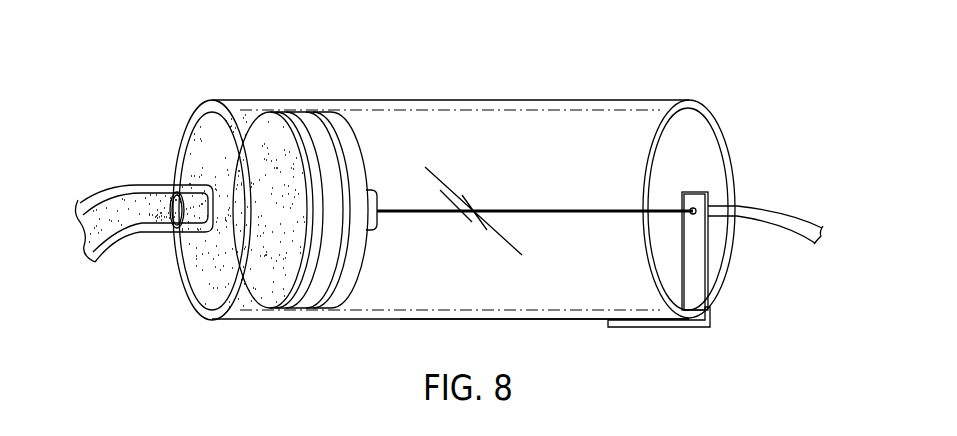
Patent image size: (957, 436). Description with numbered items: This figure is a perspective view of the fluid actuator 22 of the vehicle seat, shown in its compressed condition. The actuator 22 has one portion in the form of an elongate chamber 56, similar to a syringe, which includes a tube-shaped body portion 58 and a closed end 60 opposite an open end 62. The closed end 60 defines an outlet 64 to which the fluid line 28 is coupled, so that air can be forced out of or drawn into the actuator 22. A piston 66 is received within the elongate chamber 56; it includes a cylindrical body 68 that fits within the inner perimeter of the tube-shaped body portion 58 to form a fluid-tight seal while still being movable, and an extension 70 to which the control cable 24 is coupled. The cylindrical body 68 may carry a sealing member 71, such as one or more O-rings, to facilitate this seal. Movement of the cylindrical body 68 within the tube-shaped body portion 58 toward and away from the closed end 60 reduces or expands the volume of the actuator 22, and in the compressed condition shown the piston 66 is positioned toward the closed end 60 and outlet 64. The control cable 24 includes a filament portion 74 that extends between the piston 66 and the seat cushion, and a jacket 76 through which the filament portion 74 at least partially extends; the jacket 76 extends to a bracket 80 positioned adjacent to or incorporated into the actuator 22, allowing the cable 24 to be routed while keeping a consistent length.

The actuator 22 is at (523, 61).
The control cable 24 is at (748, 193).
The fluid line 28 is at (115, 188).
The elongate chamber 56 is at (223, 320).
The tube-shaped body portion 58 is at (563, 319).
The closed end 60 is at (193, 130).
The open end 62 is at (733, 161).
The outlet 64 is at (170, 222).
The piston 66 is at (302, 115).
The cylindrical body 68 is at (318, 133).
The extension 70 is at (375, 203).
The sealing member 71 is at (287, 308).
The filament portion 74 is at (570, 208).
The jacket 76 is at (787, 231).
The bracket 80 is at (710, 318).